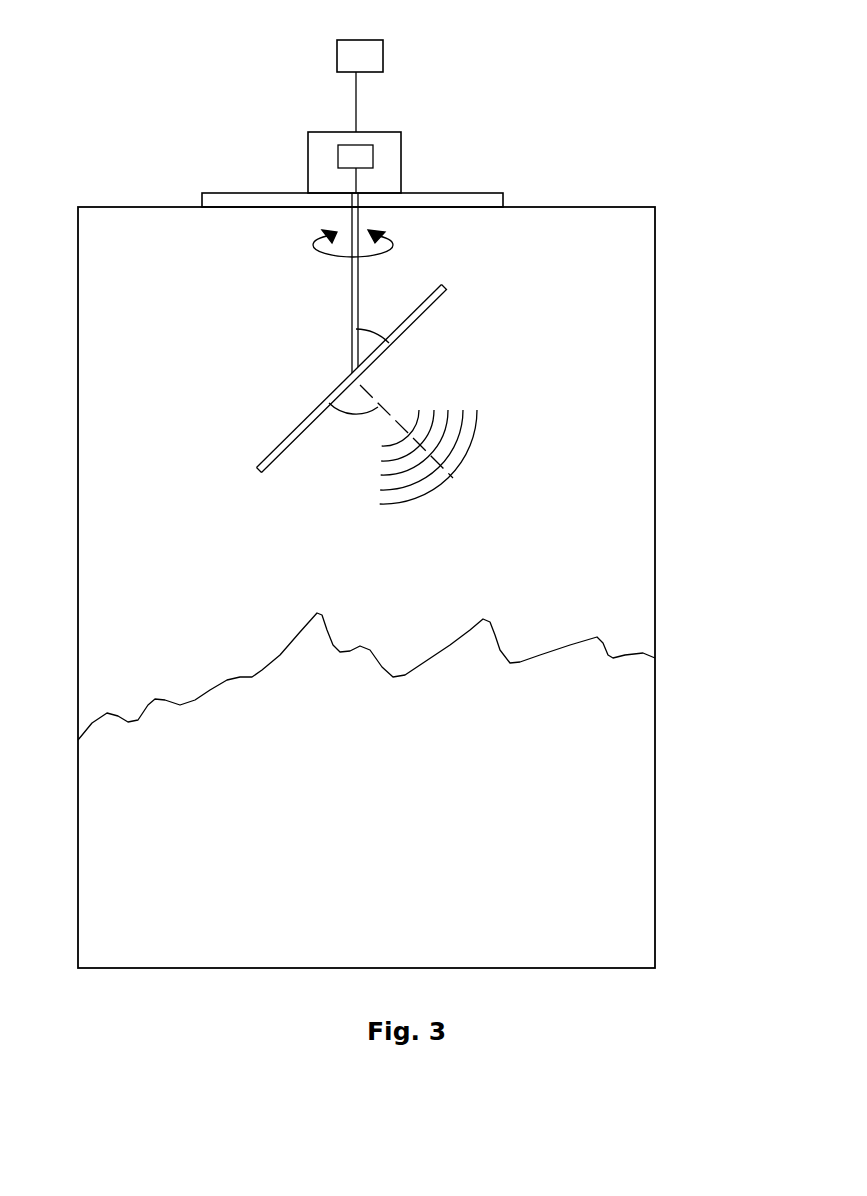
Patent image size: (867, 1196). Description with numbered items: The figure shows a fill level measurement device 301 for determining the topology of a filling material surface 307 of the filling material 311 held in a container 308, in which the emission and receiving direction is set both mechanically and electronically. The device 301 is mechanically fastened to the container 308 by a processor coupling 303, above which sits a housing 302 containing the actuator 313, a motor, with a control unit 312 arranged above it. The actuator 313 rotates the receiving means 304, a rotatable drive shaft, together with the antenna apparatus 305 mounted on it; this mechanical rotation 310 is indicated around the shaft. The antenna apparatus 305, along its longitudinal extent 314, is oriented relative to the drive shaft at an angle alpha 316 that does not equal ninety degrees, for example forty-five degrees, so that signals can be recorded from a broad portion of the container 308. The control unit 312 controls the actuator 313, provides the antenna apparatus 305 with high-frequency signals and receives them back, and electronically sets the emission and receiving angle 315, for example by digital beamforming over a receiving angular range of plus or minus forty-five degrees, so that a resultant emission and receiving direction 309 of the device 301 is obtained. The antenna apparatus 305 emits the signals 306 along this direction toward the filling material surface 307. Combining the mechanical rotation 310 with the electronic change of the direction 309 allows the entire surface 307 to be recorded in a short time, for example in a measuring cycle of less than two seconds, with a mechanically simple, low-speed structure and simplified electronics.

The fill level measurement device 301 is at (325, 106).
The housing 302 is at (402, 147).
The processor coupling 303 is at (487, 193).
The receiving means 304 is at (354, 275).
The antenna apparatus 305 is at (370, 379).
The signals 306 is at (470, 452).
The filling material surface 307 is at (495, 630).
The container 308 is at (656, 478).
The resultant emission/receiving direction 309 is at (388, 405).
The rotation 310 is at (322, 247).
The filling material 311 is at (401, 700).
The control unit 312 is at (378, 40).
The actuator 313 is at (355, 152).
The reflector surface 314 is at (318, 404).
The emission and/or receiving angle 315 is at (350, 417).
The angle α 316 is at (362, 326).